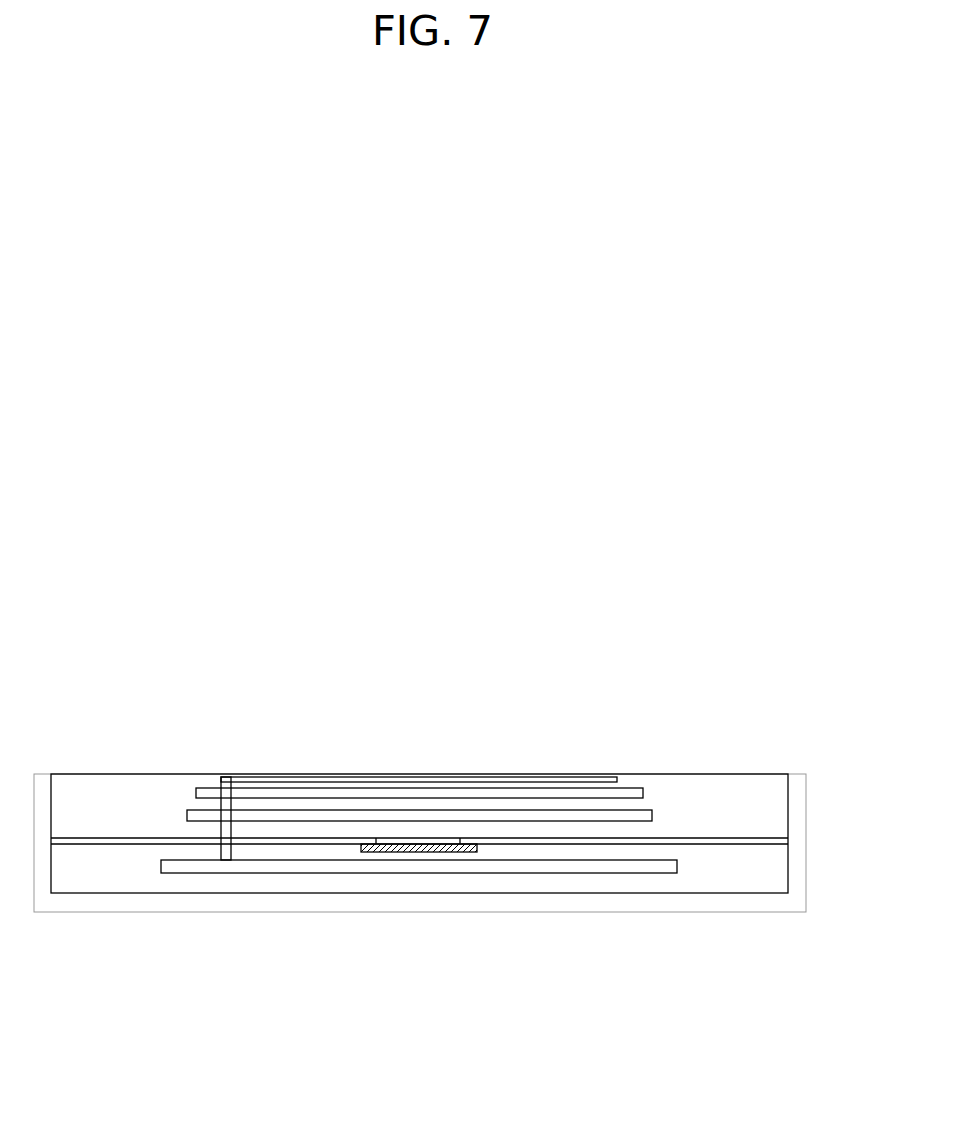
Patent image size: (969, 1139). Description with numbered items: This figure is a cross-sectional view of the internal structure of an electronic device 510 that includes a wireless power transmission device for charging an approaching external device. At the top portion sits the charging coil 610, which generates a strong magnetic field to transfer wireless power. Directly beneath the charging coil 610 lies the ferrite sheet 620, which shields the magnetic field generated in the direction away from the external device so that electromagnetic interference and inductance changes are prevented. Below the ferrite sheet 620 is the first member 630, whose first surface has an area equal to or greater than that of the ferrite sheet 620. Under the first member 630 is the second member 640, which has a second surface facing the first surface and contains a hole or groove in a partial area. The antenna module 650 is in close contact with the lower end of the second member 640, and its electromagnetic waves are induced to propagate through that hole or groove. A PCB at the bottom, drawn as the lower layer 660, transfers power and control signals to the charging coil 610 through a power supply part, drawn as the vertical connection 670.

The electronic device 510 is at (779, 649).
The charging coil 610 is at (573, 777).
The ferrite sheet 620 is at (626, 787).
The first member 630 is at (652, 815).
The second member 640 is at (783, 841).
The antenna module 650 is at (396, 853).
The bottom layer 660 is at (647, 874).
The vertical connector 670 is at (226, 861).